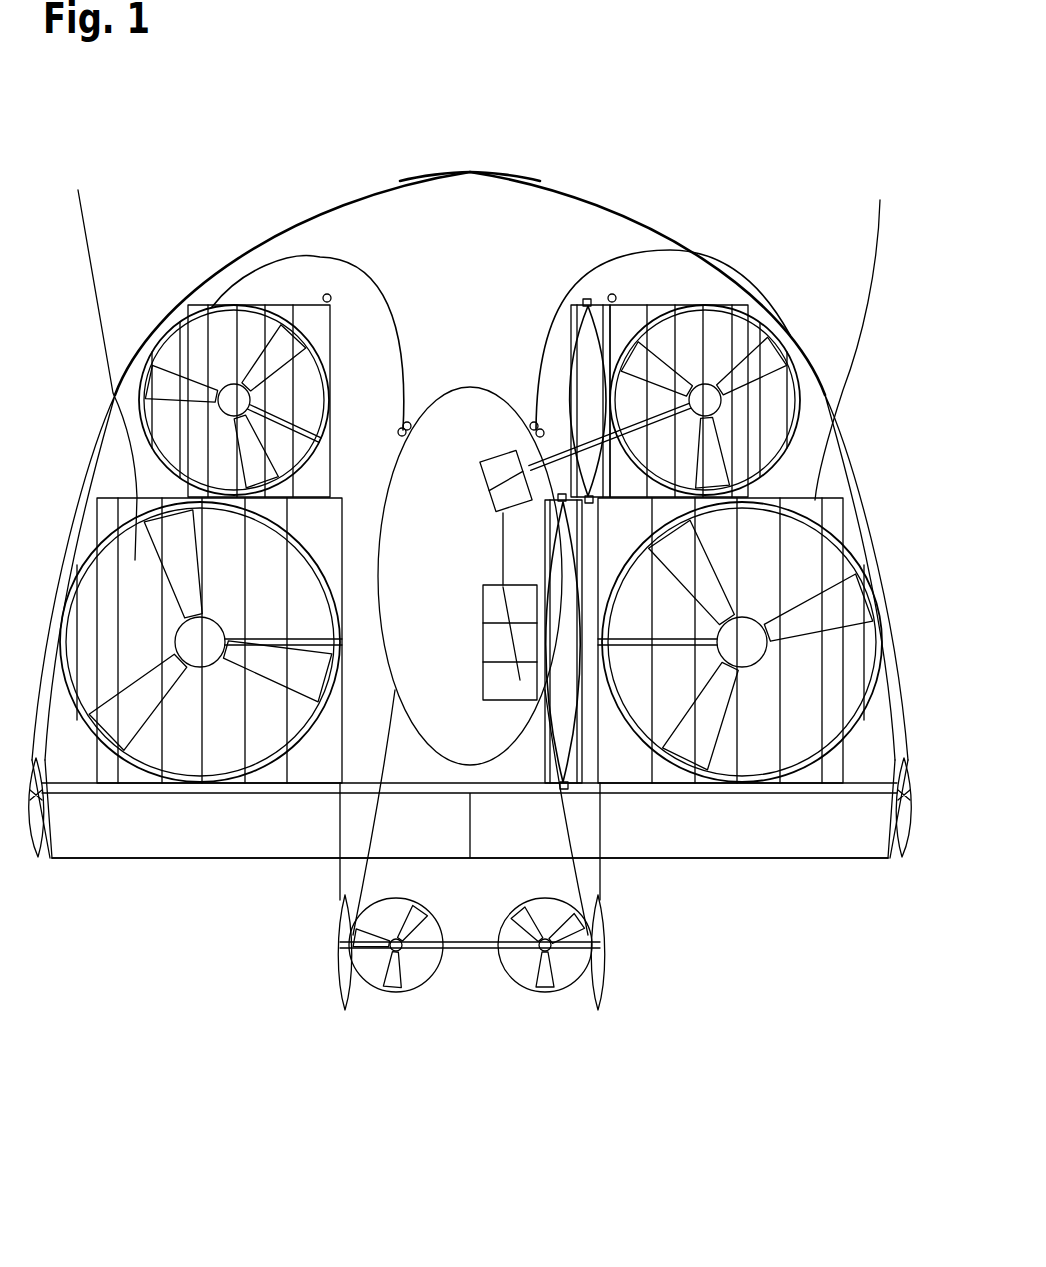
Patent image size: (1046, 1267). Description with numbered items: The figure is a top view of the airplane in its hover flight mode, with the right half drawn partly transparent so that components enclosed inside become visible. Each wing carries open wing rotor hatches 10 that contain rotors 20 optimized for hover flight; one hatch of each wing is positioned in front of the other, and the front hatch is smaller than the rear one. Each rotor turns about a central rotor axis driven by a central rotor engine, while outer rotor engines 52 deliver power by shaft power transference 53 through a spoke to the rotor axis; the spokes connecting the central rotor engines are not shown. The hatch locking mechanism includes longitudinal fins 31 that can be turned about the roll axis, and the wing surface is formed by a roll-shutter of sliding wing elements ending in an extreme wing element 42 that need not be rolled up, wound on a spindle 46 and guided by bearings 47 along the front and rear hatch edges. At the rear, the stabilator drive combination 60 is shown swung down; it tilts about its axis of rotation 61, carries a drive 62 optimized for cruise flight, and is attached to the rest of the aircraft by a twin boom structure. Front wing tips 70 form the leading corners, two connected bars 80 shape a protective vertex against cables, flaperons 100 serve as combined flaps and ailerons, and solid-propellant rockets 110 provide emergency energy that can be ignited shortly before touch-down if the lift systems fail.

The wing rotor hatch 10 is at (210, 305).
The rotor 20 is at (213, 305).
The longitudinal fin 31 is at (280, 740).
The extreme wing element 42 is at (588, 338).
The spindle 46 is at (585, 302).
The bearing along the hatch edges 47 is at (327, 294).
The outer rotor engine 52 is at (510, 586).
The shaft power transference 53 is at (630, 352).
The stabilator drive combination 60 is at (600, 1010).
The axis of rotation of the stabilator drive combination 61 is at (345, 945).
The impeller drive 62 is at (370, 988).
The front wing tip 70 is at (258, 247).
The connected bars 80 is at (470, 172).
The flaperon 100 is at (112, 820).
The solid-propellant rocket 110 is at (660, 307).